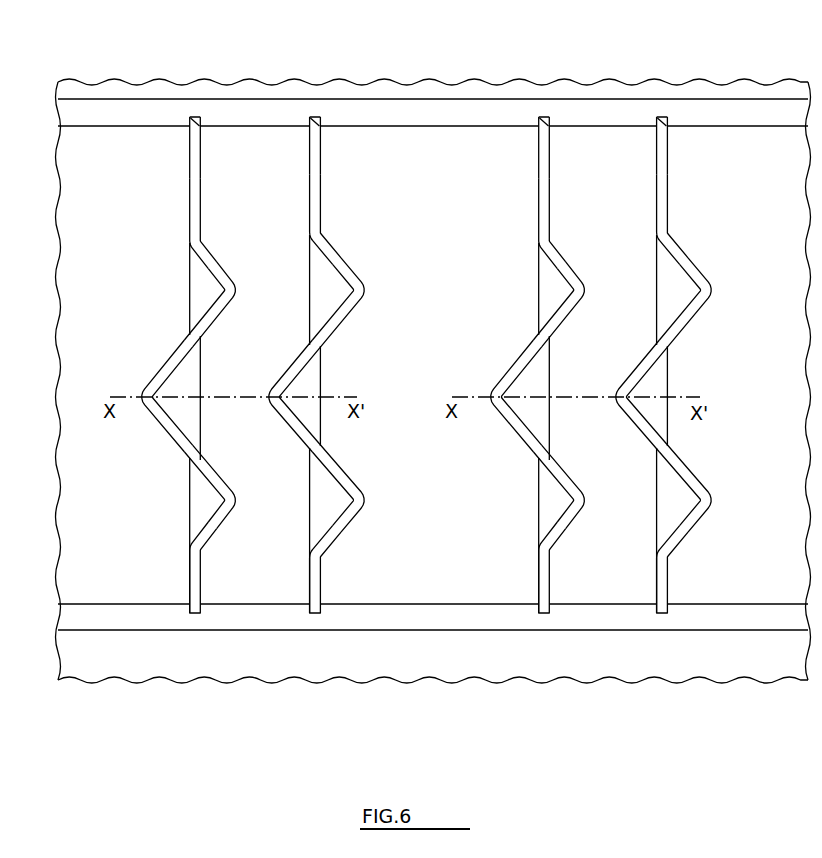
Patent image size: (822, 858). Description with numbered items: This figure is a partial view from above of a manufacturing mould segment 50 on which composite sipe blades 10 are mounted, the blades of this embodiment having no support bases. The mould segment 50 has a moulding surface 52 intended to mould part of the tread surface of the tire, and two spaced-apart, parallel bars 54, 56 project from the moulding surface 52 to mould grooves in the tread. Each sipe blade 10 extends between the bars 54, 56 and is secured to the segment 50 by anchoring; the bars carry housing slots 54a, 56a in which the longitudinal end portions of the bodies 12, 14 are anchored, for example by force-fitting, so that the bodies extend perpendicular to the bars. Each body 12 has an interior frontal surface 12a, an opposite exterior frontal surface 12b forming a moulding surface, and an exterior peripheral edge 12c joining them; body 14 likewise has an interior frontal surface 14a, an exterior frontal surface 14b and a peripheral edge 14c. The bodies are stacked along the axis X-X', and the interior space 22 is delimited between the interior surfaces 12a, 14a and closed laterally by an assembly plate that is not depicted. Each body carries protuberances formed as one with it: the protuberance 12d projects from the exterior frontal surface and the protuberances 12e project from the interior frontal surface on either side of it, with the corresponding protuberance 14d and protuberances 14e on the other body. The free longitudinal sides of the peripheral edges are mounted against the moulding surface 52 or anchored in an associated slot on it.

The composite sipe blade 10 is at (372, 192).
The body 12 is at (188, 163).
The interior frontal surface 12a is at (204, 557).
The exterior frontal surface 12b is at (189, 566).
The exterior peripheral edge 12c is at (195, 614).
The protuberance 12d is at (141, 396).
The protuberances 12e is at (232, 290).
The body 14 is at (344, 258).
The interior frontal surface 14a is at (306, 558).
The exterior frontal surface 14b is at (321, 566).
The exterior peripheral edge 14c is at (315, 614).
The protuberance 14d is at (270, 395).
The protuberances 14e is at (364, 289).
The interior space 22 is at (275, 318).
The mould segment 50 is at (110, 474).
The moulding surface 52 is at (98, 437).
The bar 54 is at (100, 108).
The housing slots 54a is at (190, 127).
The bar 56 is at (107, 619).
The housing slots 56a is at (189, 595).